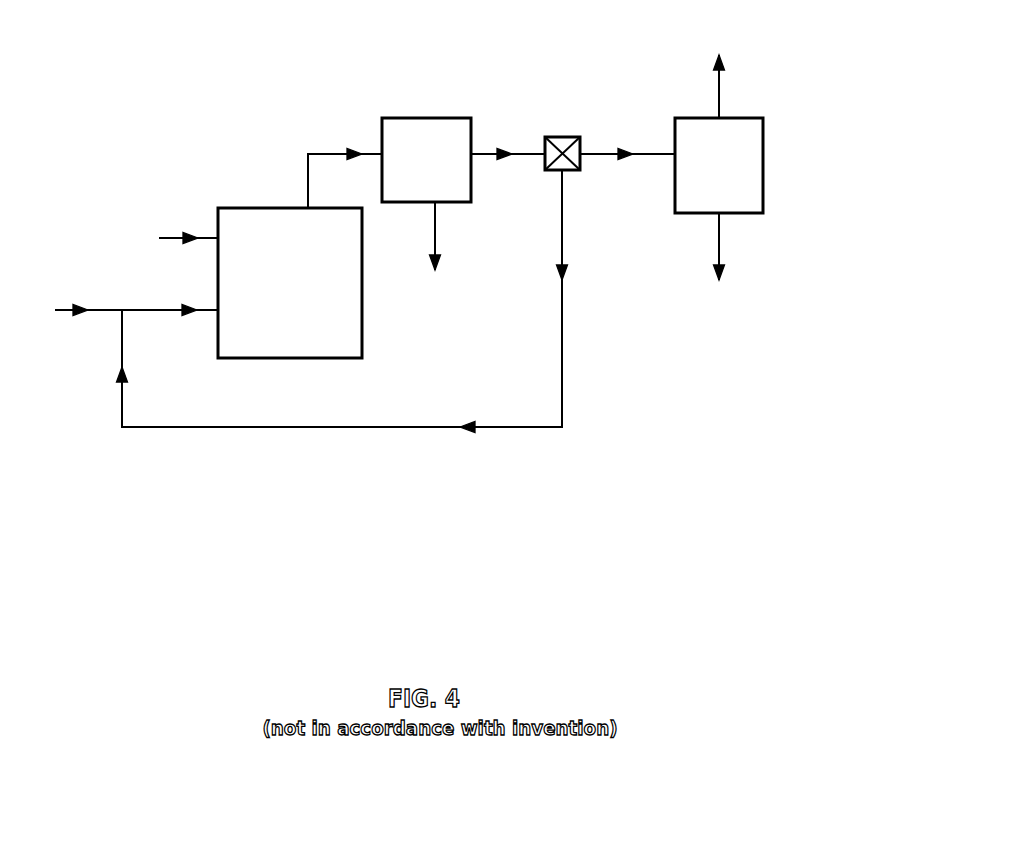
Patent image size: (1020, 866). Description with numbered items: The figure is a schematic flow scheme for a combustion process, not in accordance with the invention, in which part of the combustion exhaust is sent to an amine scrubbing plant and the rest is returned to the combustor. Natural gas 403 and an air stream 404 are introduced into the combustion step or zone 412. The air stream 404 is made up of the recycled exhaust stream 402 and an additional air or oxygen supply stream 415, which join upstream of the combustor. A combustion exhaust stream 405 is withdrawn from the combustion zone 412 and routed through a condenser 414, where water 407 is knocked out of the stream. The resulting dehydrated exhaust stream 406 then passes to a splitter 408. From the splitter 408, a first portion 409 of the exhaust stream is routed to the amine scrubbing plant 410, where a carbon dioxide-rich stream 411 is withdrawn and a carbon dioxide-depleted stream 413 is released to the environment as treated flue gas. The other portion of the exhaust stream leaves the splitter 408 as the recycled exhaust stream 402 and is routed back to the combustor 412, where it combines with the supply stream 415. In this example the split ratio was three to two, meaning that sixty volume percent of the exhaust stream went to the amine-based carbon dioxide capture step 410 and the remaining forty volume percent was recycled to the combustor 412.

The recycled exhaust stream 402 is at (342, 312).
The natural gas 403 is at (166, 239).
The air stream 404 is at (170, 300).
The combustion exhaust stream 405 is at (345, 167).
The dehydrated exhaust stream 406 is at (508, 143).
The water 407 is at (435, 251).
The splitter 408 is at (567, 137).
The first portion of the exhaust stream 409 is at (627, 143).
The amine scrubbing plant 410 is at (763, 172).
The carbon dioxide-rich stream 411 is at (719, 264).
The combustion step or zone 412 is at (258, 208).
The carbon dioxide-depleted stream 413 is at (719, 72).
The condenser 414 is at (433, 118).
The additional air or oxygen supply stream 415 is at (78, 301).